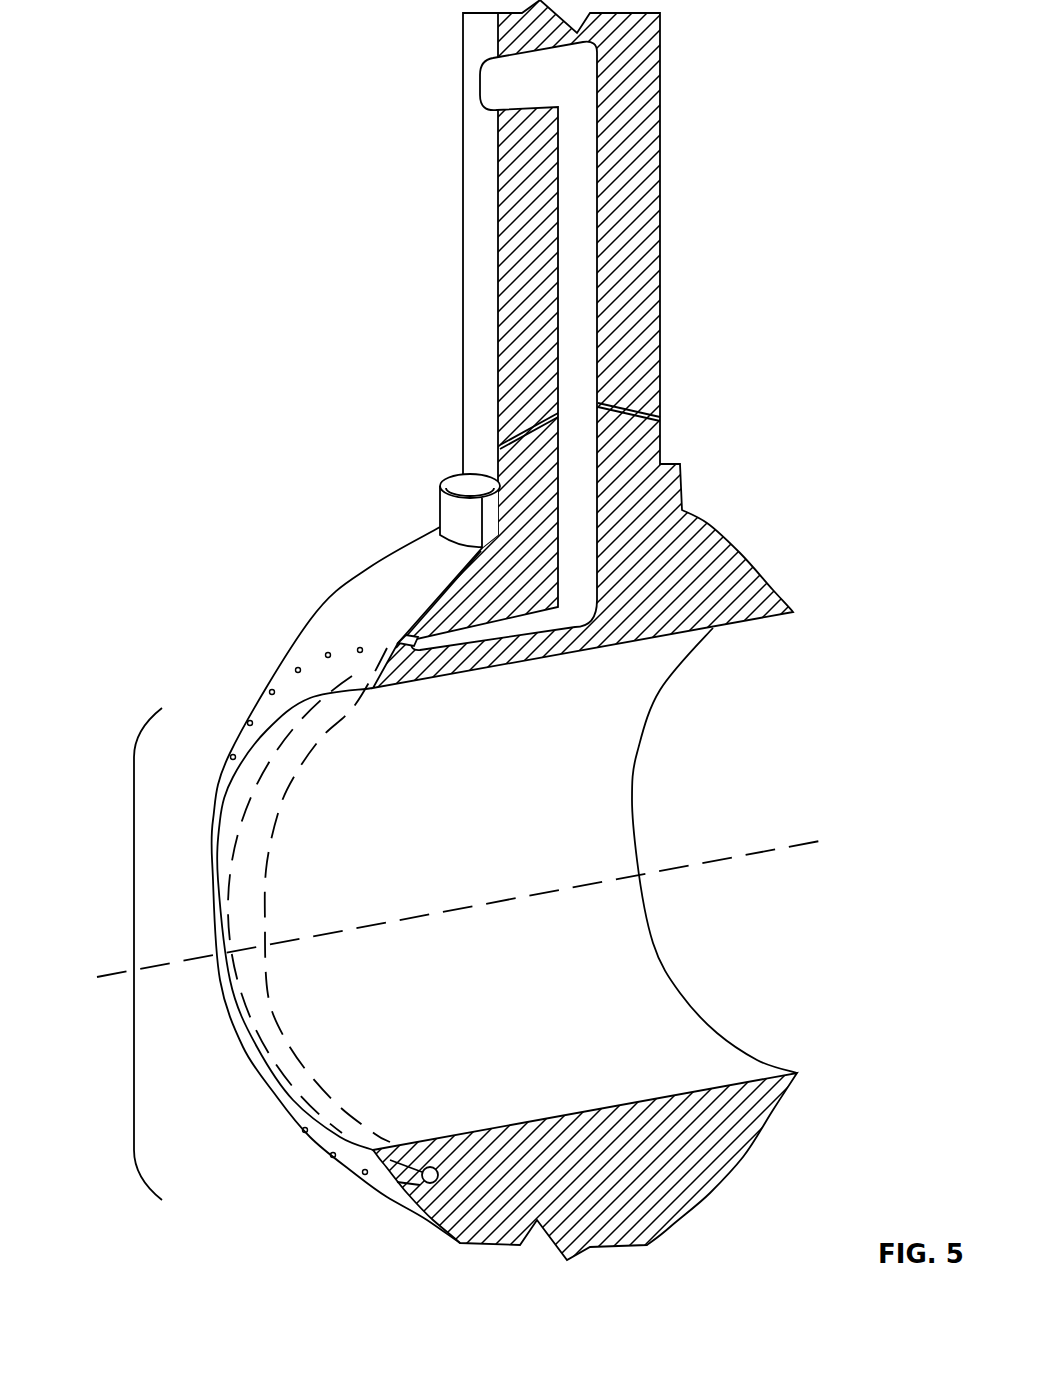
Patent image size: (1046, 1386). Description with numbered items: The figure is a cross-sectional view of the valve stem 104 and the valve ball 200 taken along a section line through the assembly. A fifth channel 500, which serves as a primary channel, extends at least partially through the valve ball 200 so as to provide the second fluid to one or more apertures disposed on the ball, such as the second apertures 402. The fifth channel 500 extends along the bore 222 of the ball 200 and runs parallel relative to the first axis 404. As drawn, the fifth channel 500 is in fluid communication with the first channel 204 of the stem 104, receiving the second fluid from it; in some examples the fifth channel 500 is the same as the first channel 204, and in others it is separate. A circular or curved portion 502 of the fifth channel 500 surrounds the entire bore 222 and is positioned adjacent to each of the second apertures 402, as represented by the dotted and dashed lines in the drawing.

The valve stem 104 is at (657, 125).
The valve ball 200 is at (737, 540).
The first channel 204 is at (575, 232).
The bore 222 is at (747, 753).
The second apertures 402 is at (134, 905).
The first axis 404 is at (790, 847).
The fifth channel 500 is at (453, 640).
The curved portion 502 is at (263, 853).